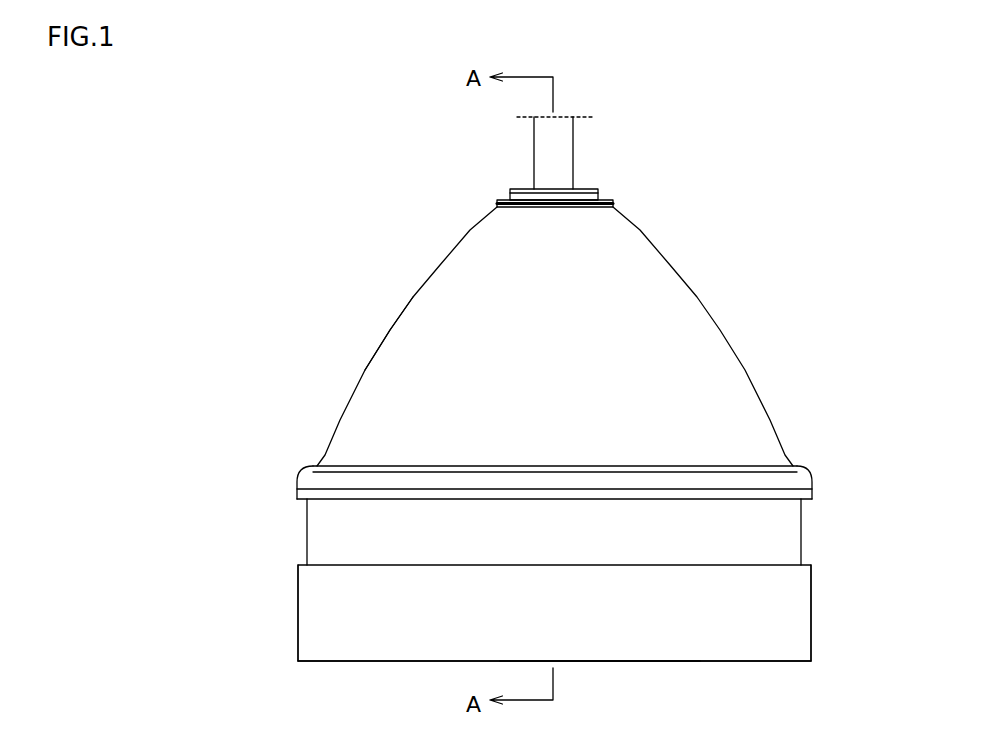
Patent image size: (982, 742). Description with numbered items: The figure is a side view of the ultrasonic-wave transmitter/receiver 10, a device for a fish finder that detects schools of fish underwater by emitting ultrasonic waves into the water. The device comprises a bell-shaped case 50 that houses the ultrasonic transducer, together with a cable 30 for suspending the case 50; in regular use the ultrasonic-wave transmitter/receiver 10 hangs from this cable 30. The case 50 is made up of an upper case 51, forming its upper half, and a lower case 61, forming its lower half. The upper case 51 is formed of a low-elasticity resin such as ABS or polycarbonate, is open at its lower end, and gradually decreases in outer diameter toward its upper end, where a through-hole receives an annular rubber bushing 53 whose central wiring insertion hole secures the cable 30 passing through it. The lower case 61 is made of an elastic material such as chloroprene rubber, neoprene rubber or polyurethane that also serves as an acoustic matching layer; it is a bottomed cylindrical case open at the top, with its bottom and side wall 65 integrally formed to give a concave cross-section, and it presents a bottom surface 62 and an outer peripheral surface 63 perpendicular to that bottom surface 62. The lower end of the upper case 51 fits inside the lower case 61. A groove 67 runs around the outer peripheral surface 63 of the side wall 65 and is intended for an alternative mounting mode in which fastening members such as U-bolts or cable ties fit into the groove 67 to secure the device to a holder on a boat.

The ultrasonic-wave transmitter/receiver 10 is at (272, 164).
The cable 30 is at (547, 155).
The case 50 is at (695, 299).
The upper case 51 is at (428, 292).
The bushing 53 is at (580, 197).
The lower case 61 is at (378, 650).
The bottom surface 62 is at (704, 668).
The outer peripheral surface 63 is at (290, 624).
The side wall 65 is at (603, 650).
The groove 67 is at (518, 505).